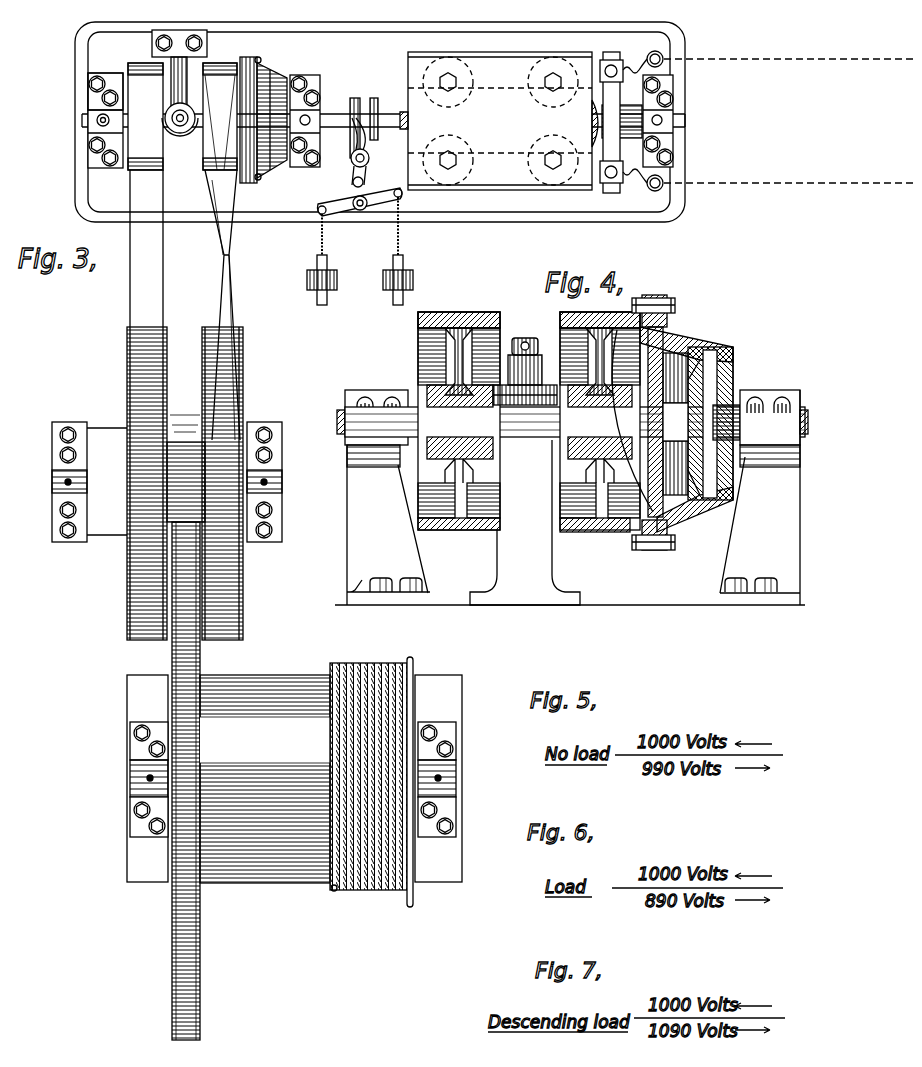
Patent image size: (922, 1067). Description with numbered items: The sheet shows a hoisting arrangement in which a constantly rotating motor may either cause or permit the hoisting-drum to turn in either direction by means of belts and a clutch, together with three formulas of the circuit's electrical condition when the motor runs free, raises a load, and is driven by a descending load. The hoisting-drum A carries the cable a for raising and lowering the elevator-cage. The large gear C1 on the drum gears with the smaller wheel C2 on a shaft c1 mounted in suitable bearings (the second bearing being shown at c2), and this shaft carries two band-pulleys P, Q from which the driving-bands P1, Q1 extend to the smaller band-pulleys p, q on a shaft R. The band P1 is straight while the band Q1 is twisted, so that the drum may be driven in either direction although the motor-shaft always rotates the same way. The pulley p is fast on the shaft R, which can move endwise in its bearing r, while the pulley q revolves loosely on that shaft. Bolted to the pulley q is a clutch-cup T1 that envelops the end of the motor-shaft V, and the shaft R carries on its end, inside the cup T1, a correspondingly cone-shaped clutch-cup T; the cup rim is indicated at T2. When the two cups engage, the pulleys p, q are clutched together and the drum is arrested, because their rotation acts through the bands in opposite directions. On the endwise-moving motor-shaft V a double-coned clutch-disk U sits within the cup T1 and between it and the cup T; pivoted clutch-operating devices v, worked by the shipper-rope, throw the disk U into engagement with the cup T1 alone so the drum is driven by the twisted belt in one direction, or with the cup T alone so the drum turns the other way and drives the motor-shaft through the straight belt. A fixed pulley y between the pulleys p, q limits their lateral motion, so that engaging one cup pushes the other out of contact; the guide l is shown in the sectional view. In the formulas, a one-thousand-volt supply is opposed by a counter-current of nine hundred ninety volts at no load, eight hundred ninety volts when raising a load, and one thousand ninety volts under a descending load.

In FIG. 3, the band-pulley p is at (130, 72).
In FIG. 4, the band-pulley p is at (500, 322).
In FIG. 3, the band-pulley q is at (236, 95).
In FIG. 4, the band-pulley q is at (560, 322).
In FIG. 3, the clutch-cup T1 is at (272, 85).
In FIG. 4, the clutch-cup T1 is at (690, 345).
In FIG. 3, the motor-shaft V is at (332, 118).
In FIG. 4, the motor-shaft V is at (728, 410).
In FIG. 3, the clutch-operating devices v is at (360, 211).
In FIG. 3, the fixed pulley y is at (180, 133).
In FIG. 4, the fixed pulley y is at (542, 378).
In FIG. 3, the bearing r is at (88, 85).
In FIG. 4, the bearing r is at (392, 420).
In FIG. 3, the shaft R is at (88, 120).
In FIG. 4, the shaft R is at (526, 437).
In FIG. 3, the driving-band P1 is at (163, 265).
In FIG. 4, the driving-band P1 is at (460, 530).
In FIG. 3, the driving-band Q1 is at (229, 266).
In FIG. 4, the driving-band Q1 is at (586, 532).
In FIG. 3, the smaller wheel C2 is at (186, 468).
In FIG. 3, the large gear C1 is at (209, 781).
In FIG. 3, the shaft c1 is at (52, 482).
In FIG. 3, the bracket c2 is at (282, 482).
In FIG. 3, the band-pulley P is at (127, 590).
In FIG. 3, the band-pulley Q is at (232, 483).
In FIG. 3, the hoisting-drum A is at (294, 782).
In FIG. 3, the cable a is at (334, 892).
In FIG. 4, the double-coned clutch-disk U is at (714, 350).
In FIG. 4, the clutch-cup T is at (668, 422).
In FIG. 4, the cone rim T2 is at (682, 515).
In FIG. 4, the guide l is at (612, 385).